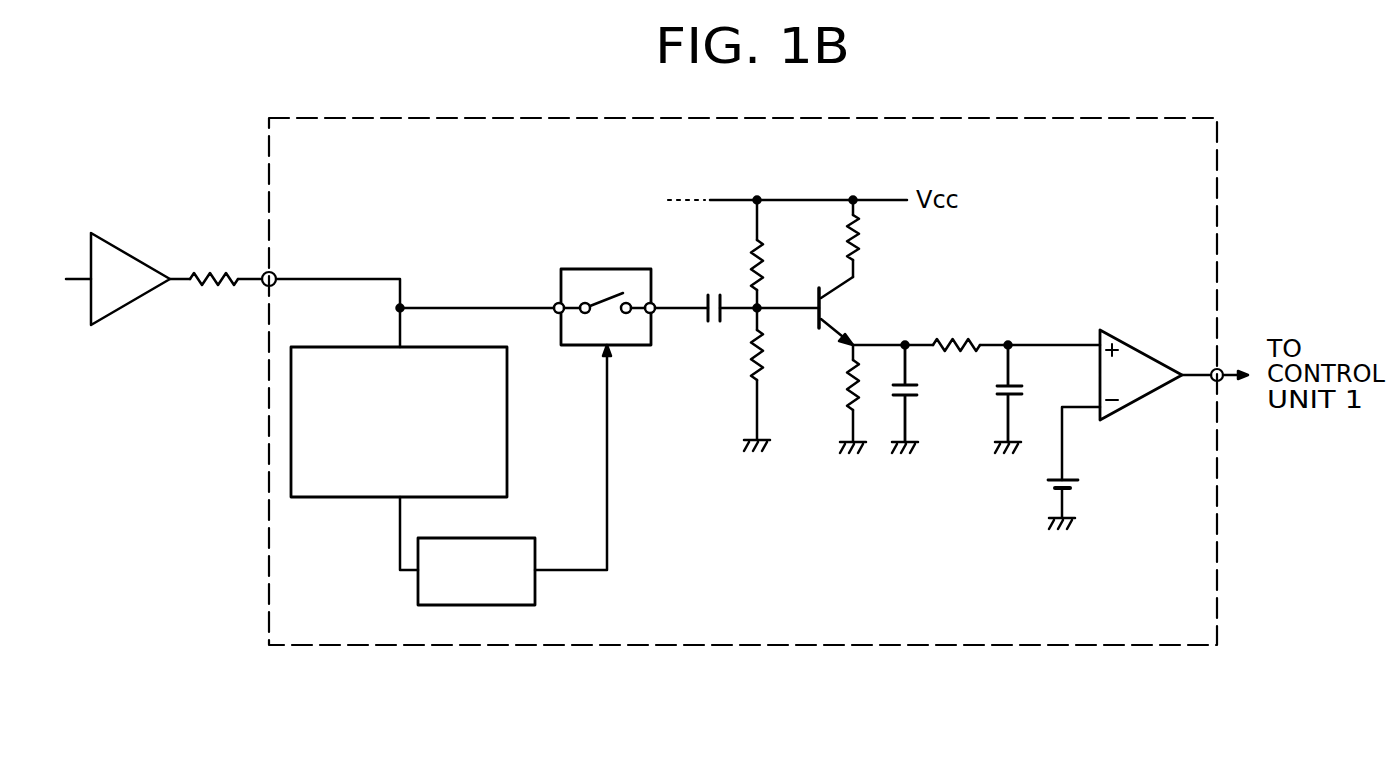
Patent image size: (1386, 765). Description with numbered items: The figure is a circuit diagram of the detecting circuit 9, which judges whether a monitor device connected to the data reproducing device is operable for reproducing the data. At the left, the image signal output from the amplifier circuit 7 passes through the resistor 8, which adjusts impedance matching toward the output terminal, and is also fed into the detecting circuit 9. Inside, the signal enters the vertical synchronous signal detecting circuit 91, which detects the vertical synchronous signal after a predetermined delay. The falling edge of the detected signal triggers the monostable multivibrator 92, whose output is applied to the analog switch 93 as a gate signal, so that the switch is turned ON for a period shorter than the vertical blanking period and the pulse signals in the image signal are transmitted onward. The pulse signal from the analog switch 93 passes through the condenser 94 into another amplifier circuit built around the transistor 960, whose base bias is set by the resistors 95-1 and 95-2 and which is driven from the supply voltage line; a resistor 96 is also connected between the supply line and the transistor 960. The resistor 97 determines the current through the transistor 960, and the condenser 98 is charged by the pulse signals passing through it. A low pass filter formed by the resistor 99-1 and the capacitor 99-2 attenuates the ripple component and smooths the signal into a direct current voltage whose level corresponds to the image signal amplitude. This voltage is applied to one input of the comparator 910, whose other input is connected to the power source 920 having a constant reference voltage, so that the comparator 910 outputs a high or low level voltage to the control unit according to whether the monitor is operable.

The amplifier circuit 7 is at (133, 305).
The resistor 8 is at (208, 270).
The detecting circuit 9 is at (826, 645).
The vertical synchronous signal detecting circuit 91 is at (507, 458).
The monostable multivibrator 92 is at (536, 538).
The analog switch 93 is at (622, 345).
The condenser (capacitor) 94 is at (708, 310).
The resistor 95-1 is at (788, 262).
The resistor 95-2 is at (761, 347).
The resistor 96 is at (860, 229).
The transistor 960 is at (840, 289).
The resistor 97 is at (840, 392).
The condenser (capacitor) 98 is at (943, 385).
The resistor 99-1 is at (950, 337).
The capacitor 99-2 is at (1047, 385).
The comparator 910 is at (1156, 355).
The power source 920 is at (1048, 484).